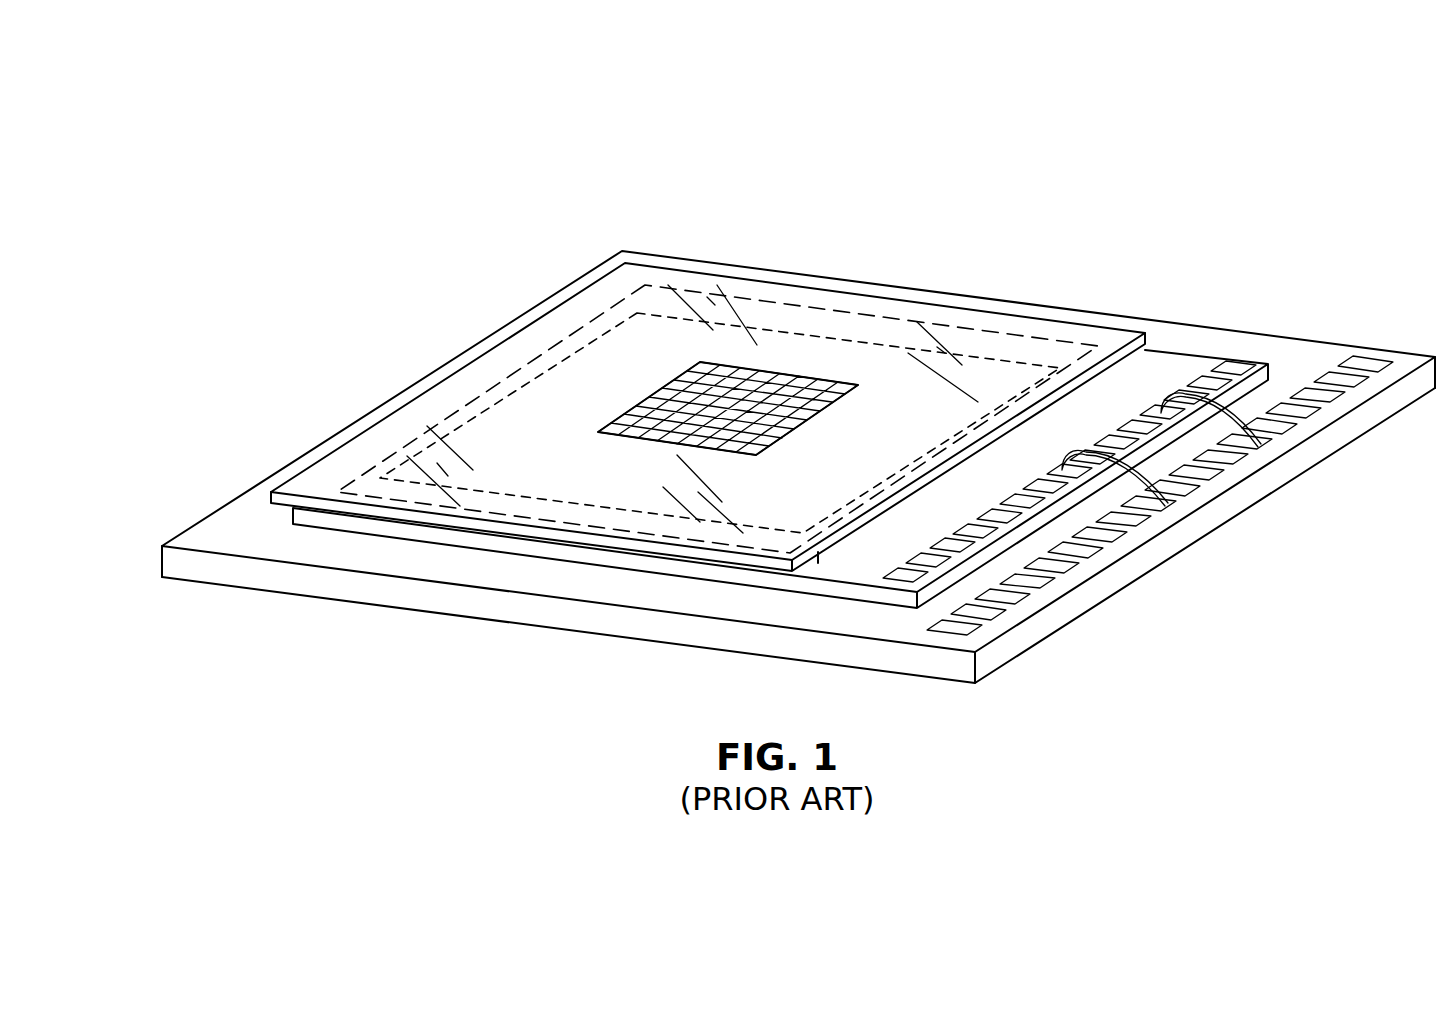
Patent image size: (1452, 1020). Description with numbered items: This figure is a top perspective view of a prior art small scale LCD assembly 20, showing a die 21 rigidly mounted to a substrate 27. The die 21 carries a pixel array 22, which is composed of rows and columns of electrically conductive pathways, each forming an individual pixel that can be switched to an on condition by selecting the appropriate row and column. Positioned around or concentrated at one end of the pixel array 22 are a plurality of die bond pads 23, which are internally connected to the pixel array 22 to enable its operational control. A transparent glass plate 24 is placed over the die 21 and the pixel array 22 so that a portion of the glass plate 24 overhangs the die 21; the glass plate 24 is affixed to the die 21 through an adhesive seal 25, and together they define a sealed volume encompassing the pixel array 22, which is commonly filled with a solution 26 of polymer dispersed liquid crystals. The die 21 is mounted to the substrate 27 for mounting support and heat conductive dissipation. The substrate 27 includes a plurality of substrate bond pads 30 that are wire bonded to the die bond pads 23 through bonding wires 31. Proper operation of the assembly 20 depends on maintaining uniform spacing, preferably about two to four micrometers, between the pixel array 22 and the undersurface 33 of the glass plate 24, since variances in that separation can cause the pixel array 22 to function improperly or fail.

The LCD assembly 20 is at (986, 124).
The die 21 is at (1178, 340).
The pixel array 22 is at (801, 386).
The die bond pads 23 is at (1228, 370).
The glass plate 24 is at (356, 435).
The adhesive seal 25 is at (1061, 355).
The solution of Polymer Dispersed Liquid Crystals 26 is at (986, 376).
The substrate 27 is at (232, 578).
The substrate bond pads 30 is at (1083, 549).
The bonding wires 31 is at (1308, 428).
The undersurface of the glass plate 33 is at (282, 505).